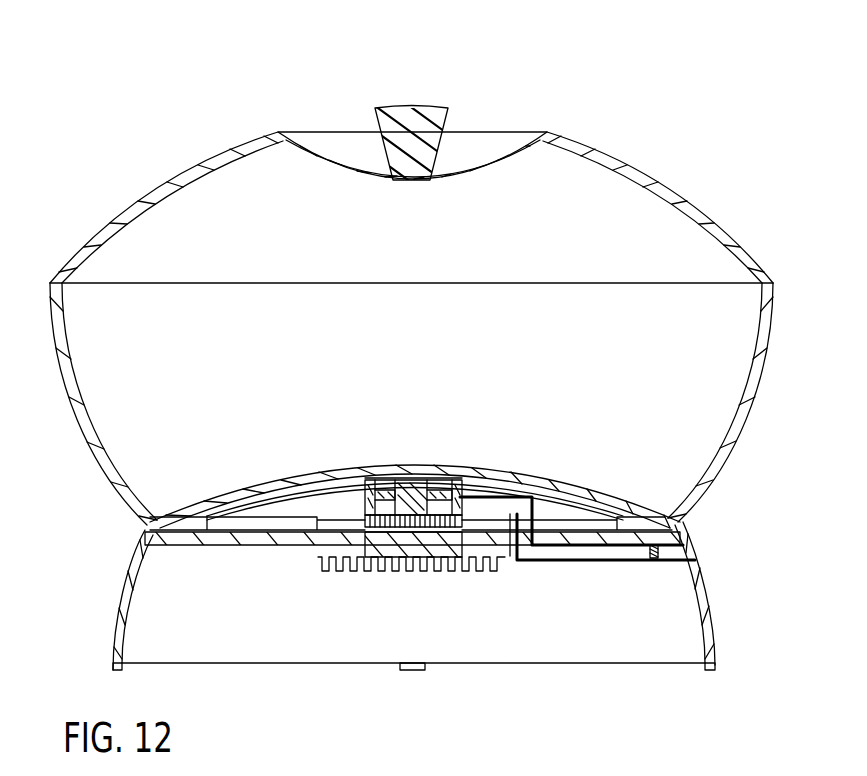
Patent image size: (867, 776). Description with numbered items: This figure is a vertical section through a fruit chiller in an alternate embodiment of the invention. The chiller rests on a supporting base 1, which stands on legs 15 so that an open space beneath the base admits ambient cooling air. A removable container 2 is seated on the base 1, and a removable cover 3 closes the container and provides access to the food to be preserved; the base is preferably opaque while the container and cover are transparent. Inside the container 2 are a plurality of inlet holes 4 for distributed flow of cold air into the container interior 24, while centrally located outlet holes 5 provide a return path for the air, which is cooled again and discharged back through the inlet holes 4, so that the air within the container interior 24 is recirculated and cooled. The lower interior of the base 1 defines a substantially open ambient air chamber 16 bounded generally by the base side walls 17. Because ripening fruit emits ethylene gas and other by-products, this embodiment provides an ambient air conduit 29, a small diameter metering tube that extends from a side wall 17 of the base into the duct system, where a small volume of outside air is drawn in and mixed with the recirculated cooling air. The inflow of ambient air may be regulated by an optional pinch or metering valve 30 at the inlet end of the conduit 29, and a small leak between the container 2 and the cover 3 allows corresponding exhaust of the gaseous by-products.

The supporting base 1 is at (122, 583).
The removable container 2 is at (63, 384).
The removable cover 3 is at (156, 191).
The inlet holes 4 is at (190, 503).
The outlet holes 5 is at (416, 478).
The legs 15 is at (113, 666).
The ambient air chamber 16 is at (663, 615).
The base side walls 17 is at (696, 626).
The container interior 24 is at (426, 364).
The ambient air conduit 29 is at (577, 564).
The metering valve 30 is at (642, 553).